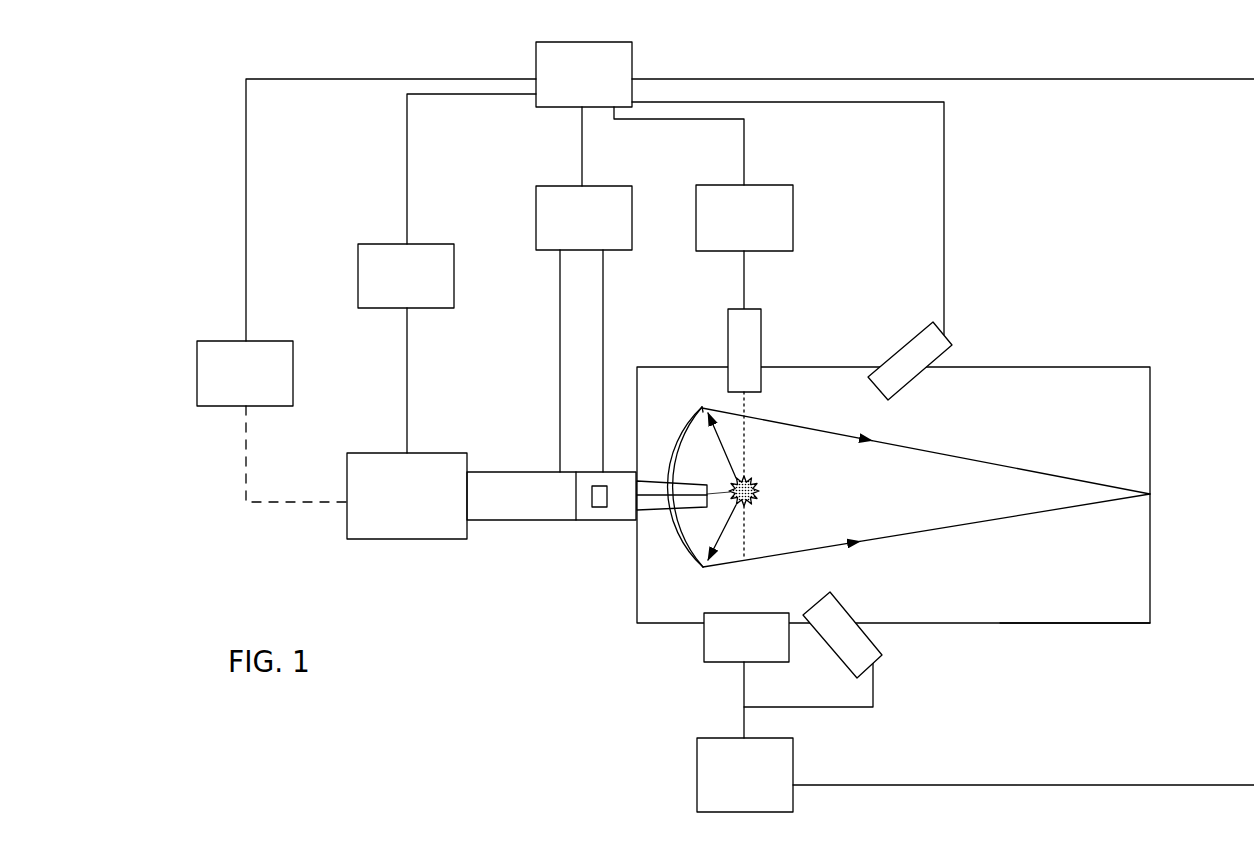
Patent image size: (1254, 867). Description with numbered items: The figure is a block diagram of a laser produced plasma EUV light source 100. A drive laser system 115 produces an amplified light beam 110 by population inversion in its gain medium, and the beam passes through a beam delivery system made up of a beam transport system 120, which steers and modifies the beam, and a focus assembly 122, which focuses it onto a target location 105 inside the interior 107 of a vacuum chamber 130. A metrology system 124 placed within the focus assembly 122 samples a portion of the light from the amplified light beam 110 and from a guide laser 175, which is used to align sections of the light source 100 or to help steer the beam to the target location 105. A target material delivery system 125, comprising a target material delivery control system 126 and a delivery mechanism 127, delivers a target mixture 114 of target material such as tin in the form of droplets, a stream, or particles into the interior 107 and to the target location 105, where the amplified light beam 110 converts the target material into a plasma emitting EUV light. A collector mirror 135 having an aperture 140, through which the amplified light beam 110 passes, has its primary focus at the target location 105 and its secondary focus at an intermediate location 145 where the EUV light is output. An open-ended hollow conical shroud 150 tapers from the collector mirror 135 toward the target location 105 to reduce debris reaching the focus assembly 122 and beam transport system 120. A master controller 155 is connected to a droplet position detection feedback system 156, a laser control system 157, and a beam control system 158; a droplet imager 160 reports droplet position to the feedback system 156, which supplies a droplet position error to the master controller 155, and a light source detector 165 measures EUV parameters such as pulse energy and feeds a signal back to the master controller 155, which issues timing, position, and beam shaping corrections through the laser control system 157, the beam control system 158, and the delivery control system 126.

The LPP EUV light source 100 is at (1113, 27).
The target location 105 is at (760, 490).
The interior 107 is at (1066, 595).
The amplified light beam 110 is at (645, 528).
The target mixture 114 is at (747, 453).
The drive laser system 115 is at (347, 482).
The beam transport system 120 is at (512, 472).
The focus assembly 122 is at (593, 472).
The metrology system 124 is at (607, 487).
The target material delivery system 125 is at (825, 281).
The target material delivery control system 126 is at (793, 215).
The delivery mechanism 127 is at (761, 322).
The vacuum chamber 130 is at (1095, 367).
The collector mirror 135 is at (685, 548).
The aperture 140 is at (660, 480).
The intermediate location 145 is at (1162, 489).
The hollow conical shroud 150 is at (660, 513).
The master controller 155 is at (536, 46).
The droplet position detection feedback system 156 is at (697, 776).
The laser control system 157 is at (358, 272).
The beam control system 158 is at (536, 200).
The droplet imager 160 is at (704, 645).
The light source detector 165 is at (882, 657).
The guide laser 175 is at (197, 377).